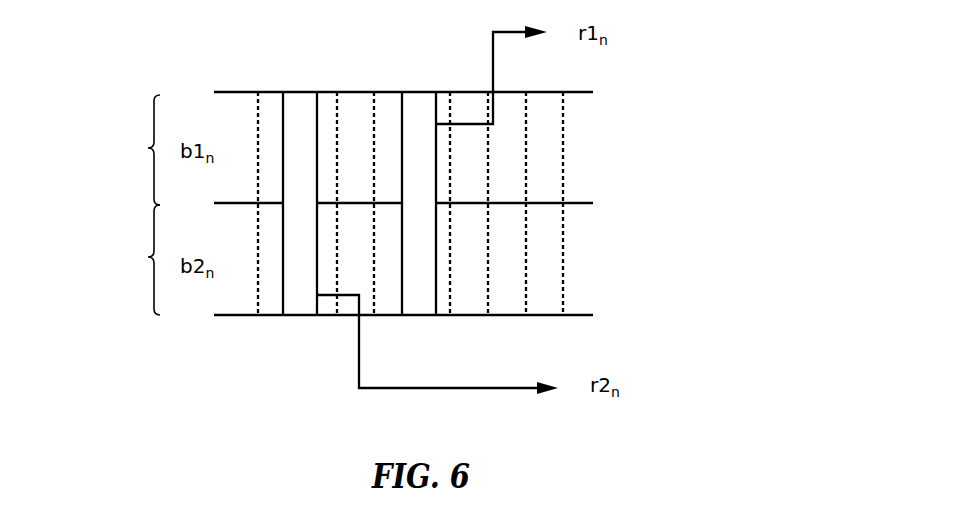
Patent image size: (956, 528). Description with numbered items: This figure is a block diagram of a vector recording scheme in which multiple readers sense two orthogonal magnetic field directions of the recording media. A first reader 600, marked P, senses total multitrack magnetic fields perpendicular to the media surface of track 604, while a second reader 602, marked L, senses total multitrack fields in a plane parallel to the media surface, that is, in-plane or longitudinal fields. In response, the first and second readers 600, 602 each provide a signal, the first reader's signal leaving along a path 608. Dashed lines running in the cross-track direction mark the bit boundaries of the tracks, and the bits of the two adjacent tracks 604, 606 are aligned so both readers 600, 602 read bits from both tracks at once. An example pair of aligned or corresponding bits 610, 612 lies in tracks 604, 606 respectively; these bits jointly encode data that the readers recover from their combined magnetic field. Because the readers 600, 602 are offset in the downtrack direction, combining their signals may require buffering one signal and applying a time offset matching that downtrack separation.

The first reader 600 is at (294, 92).
The second reader 602 is at (421, 98).
The track 604 is at (150, 149).
The track 606 is at (150, 257).
The first output path r1n 608 is at (493, 78).
The bit 610 is at (545, 145).
The bit 612 is at (545, 254).